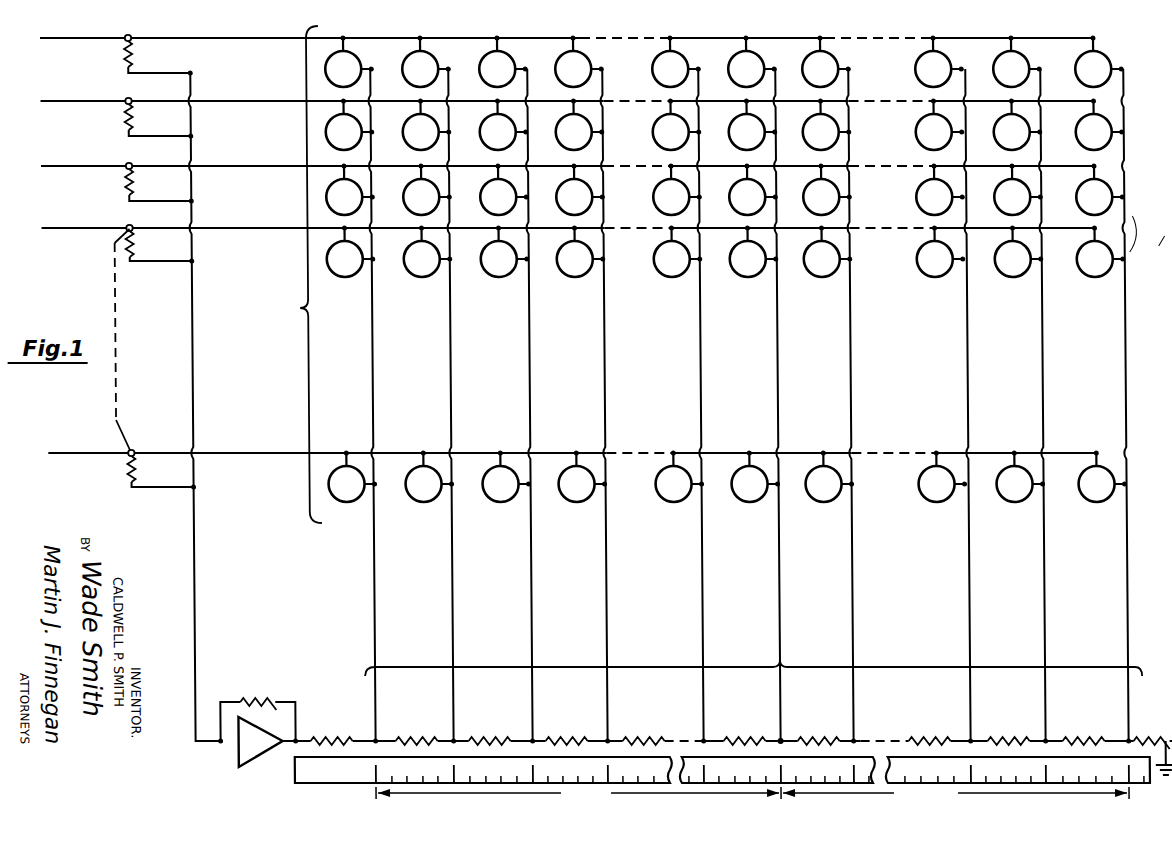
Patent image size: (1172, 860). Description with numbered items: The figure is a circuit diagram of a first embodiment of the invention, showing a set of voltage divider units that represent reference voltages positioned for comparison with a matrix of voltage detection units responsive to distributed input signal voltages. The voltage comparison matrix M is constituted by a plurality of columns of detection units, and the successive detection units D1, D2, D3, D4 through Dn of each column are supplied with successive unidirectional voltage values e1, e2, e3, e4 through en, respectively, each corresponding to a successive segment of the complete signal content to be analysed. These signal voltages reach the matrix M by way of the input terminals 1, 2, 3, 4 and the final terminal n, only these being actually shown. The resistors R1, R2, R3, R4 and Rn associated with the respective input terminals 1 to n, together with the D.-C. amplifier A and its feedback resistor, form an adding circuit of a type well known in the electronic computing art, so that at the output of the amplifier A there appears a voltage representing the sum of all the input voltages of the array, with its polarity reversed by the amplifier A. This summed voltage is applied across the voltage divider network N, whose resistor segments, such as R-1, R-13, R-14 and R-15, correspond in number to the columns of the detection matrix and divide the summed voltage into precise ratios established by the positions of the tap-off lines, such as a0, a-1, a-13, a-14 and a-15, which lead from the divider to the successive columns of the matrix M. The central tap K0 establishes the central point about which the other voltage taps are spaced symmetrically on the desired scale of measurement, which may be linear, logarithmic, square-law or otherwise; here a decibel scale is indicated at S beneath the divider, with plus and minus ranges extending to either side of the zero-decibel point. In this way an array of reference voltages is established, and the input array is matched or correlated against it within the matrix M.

The input terminal 1 is at (131, 35).
The input terminal 2 is at (131, 98).
The input terminal 3 is at (131, 163).
The input terminal 4 is at (131, 225).
The final input terminal n is at (131, 450).
The signal voltage e1 is at (566, 31).
The signal voltage e2 is at (566, 94).
The signal voltage e3 is at (567, 159).
The signal voltage e4 is at (567, 221).
The signal voltage en is at (572, 444).
The resistor R1 is at (121, 55).
The resistor R2 is at (121, 118).
The resistor R3 is at (121, 183).
The resistor R4 is at (136, 254).
The resistor Rn is at (125, 468).
The voltage comparison matrix M is at (702, 274).
The detection unit D1 is at (724, 62).
The detection unit D2 is at (724, 125).
The detection unit D3 is at (725, 190).
The detection unit D4 is at (726, 252).
The detection unit Dn is at (727, 477).
The tap-off line a0 is at (770, 567).
The tap-off line a-1 is at (838, 577).
The tap-off line a-13 is at (945, 572).
The tap-off line a-14 is at (1020, 572).
The tap-off line a-15 is at (1100, 572).
The voltage divider network N is at (768, 709).
The central tap K0 is at (778, 735).
The resistor segment R-1 is at (799, 732).
The resistor segment R-13 is at (910, 732).
The resistor segment R-14 is at (989, 732).
The resistor segment R-15 is at (1064, 732).
The D.-C. amplifier A is at (260, 743).
The decibel scale S is at (295, 783).